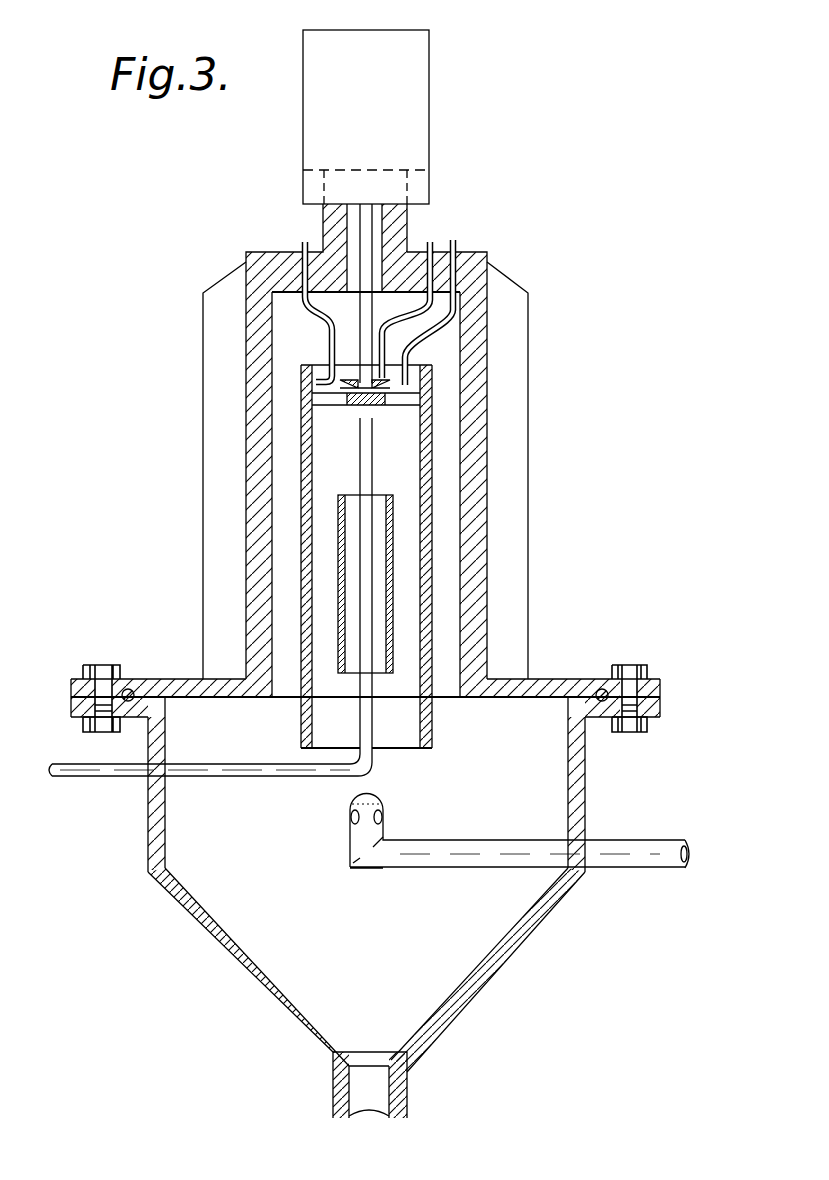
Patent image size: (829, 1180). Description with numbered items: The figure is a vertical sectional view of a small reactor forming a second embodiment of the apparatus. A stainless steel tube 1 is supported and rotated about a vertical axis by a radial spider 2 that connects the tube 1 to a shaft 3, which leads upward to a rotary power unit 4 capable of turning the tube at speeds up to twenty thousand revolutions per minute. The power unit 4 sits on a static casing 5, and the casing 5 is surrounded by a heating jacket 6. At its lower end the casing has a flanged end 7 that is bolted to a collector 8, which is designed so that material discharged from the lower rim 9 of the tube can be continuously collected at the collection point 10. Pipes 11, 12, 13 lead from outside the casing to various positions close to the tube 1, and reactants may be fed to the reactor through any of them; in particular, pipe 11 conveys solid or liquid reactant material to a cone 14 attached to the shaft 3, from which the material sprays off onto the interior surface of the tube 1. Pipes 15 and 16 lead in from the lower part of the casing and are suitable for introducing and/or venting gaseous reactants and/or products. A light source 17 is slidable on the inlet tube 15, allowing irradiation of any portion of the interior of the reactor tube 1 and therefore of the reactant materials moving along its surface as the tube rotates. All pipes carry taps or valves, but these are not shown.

The stainless steel tube 1 is at (303, 472).
The radial spider 2 is at (330, 402).
The shaft 3 is at (363, 222).
The rotary power unit 4 is at (313, 133).
The static casing 5 is at (475, 268).
The heating jacket 6 is at (517, 458).
The flanged end of the casing 7 is at (552, 686).
The collector 8 is at (492, 968).
The lower rim of the tube 9 is at (433, 748).
The collection point 10 is at (380, 1092).
The pipe 11 is at (431, 240).
The pipe 12 is at (453, 238).
The pipe 13 is at (300, 241).
The cone 14 is at (395, 380).
The inlet tube 15 is at (187, 764).
The pipe 16 is at (360, 835).
The light source 17 is at (393, 582).